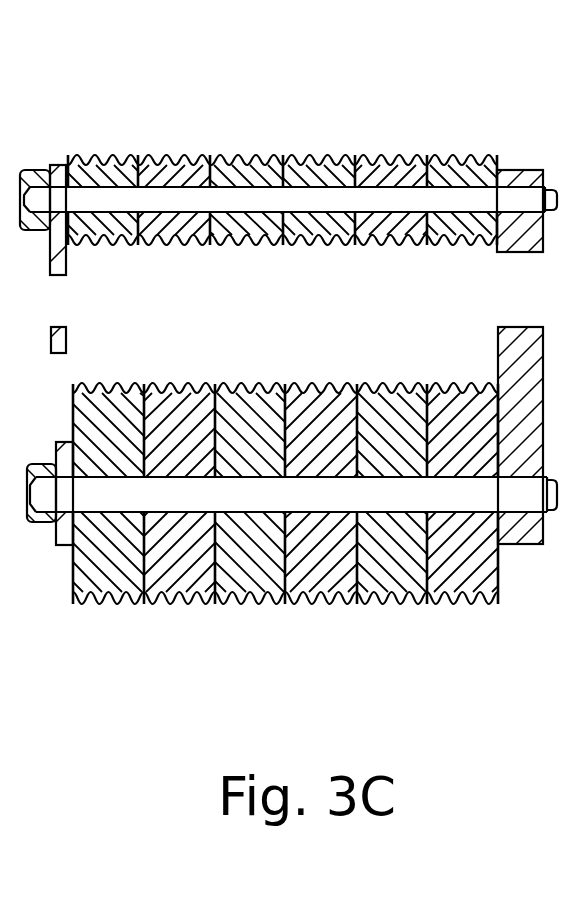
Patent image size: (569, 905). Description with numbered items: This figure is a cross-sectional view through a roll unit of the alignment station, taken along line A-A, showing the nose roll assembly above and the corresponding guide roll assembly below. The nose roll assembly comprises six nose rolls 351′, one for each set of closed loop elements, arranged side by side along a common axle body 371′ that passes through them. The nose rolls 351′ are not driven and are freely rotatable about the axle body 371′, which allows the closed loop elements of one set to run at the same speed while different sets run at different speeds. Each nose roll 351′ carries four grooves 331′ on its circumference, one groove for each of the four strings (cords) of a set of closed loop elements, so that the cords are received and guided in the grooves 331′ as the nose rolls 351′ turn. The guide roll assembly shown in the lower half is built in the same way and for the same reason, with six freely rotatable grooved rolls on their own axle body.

The nose roll 351′ is at (107, 178).
The groove 331′ is at (234, 158).
The axle body 371′ is at (379, 201).